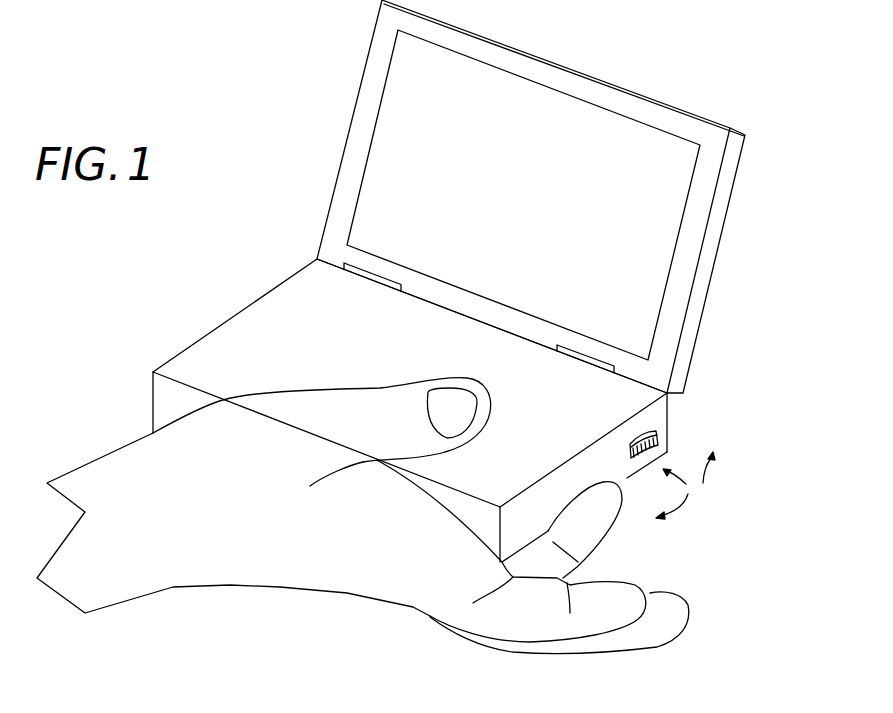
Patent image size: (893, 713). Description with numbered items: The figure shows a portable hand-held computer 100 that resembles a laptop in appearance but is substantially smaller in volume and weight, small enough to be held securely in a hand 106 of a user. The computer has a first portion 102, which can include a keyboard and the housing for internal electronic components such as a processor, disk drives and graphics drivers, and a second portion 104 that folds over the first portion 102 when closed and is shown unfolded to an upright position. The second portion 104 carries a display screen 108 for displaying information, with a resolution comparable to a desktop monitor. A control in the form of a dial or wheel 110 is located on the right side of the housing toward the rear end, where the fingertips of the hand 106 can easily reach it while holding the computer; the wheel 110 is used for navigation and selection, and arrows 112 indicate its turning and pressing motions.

The portable hand-held computer 100 is at (167, 407).
The first portion 102 is at (315, 338).
The second portion 104 is at (487, 172).
The hand 106 is at (290, 555).
The display screen 108 is at (648, 237).
The dial or wheel 110 is at (657, 442).
The arrows 112 is at (692, 490).